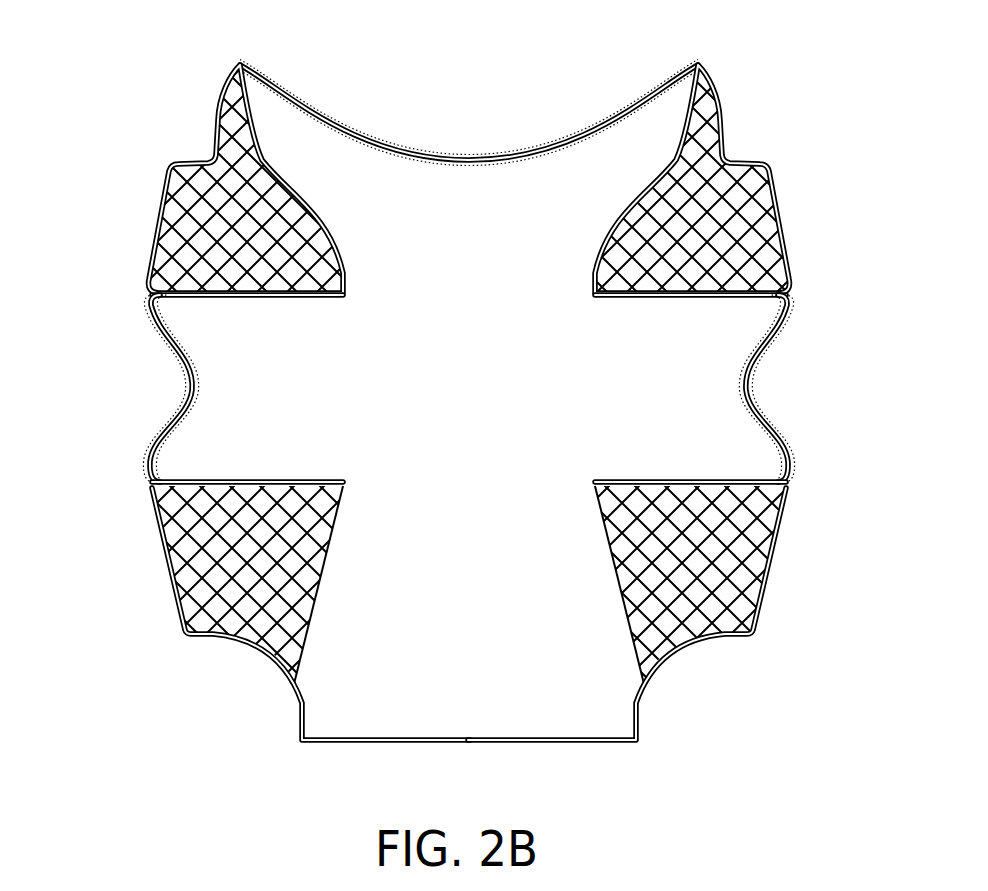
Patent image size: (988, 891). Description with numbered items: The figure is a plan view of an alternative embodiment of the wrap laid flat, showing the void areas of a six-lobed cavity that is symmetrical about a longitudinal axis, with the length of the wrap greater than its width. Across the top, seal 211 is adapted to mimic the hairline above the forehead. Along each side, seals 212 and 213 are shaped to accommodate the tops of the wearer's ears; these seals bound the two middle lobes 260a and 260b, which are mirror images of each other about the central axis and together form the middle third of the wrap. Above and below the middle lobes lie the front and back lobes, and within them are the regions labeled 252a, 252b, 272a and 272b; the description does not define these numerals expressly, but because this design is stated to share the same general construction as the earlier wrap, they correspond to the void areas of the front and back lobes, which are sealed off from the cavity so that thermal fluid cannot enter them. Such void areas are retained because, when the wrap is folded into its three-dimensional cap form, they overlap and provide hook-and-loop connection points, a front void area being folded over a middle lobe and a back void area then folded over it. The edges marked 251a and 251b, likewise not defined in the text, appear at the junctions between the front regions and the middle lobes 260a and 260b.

The seal 211 is at (348, 118).
The seal 212 is at (186, 381).
The seal 213 is at (753, 389).
The lower edge of left upper pad 251a is at (270, 298).
The lower edge of right upper pad 251b is at (687, 298).
The left upper pad 252a is at (217, 114).
The right upper pad 252b is at (728, 121).
The middle lobe 260a is at (247, 482).
The middle lobe 260b is at (680, 480).
The left lower pad 272a is at (165, 558).
The right lower pad 272b is at (780, 557).